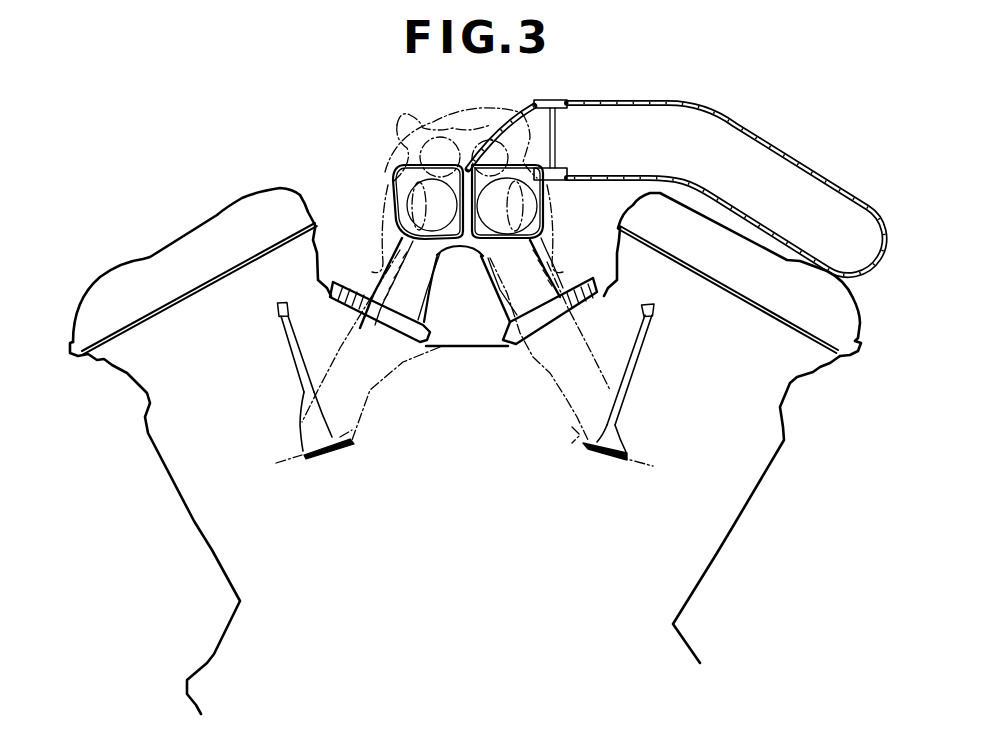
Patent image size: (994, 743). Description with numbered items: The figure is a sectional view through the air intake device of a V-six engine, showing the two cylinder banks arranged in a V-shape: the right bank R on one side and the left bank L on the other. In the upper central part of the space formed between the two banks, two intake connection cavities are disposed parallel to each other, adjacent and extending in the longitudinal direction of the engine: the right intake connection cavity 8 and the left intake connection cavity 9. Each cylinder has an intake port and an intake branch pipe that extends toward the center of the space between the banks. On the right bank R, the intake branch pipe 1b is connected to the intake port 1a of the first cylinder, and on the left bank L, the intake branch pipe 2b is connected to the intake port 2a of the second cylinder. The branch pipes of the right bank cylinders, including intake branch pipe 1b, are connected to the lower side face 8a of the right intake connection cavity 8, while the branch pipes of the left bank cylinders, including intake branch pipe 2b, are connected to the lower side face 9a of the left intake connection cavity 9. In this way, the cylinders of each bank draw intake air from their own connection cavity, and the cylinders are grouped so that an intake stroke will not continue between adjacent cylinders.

The intake port 1a is at (575, 378).
The intake branch pipe 1b is at (547, 276).
The intake port 2a is at (356, 388).
The intake branch pipe 2b is at (385, 284).
The right intake connection cavity 8 is at (543, 197).
The lower side face of right intake connection cavity 8a is at (470, 168).
The left intake connection cavity 9 is at (393, 179).
The lower side face of left intake connection cavity 9a is at (397, 177).
The left bank L is at (193, 232).
The right bank R is at (800, 390).